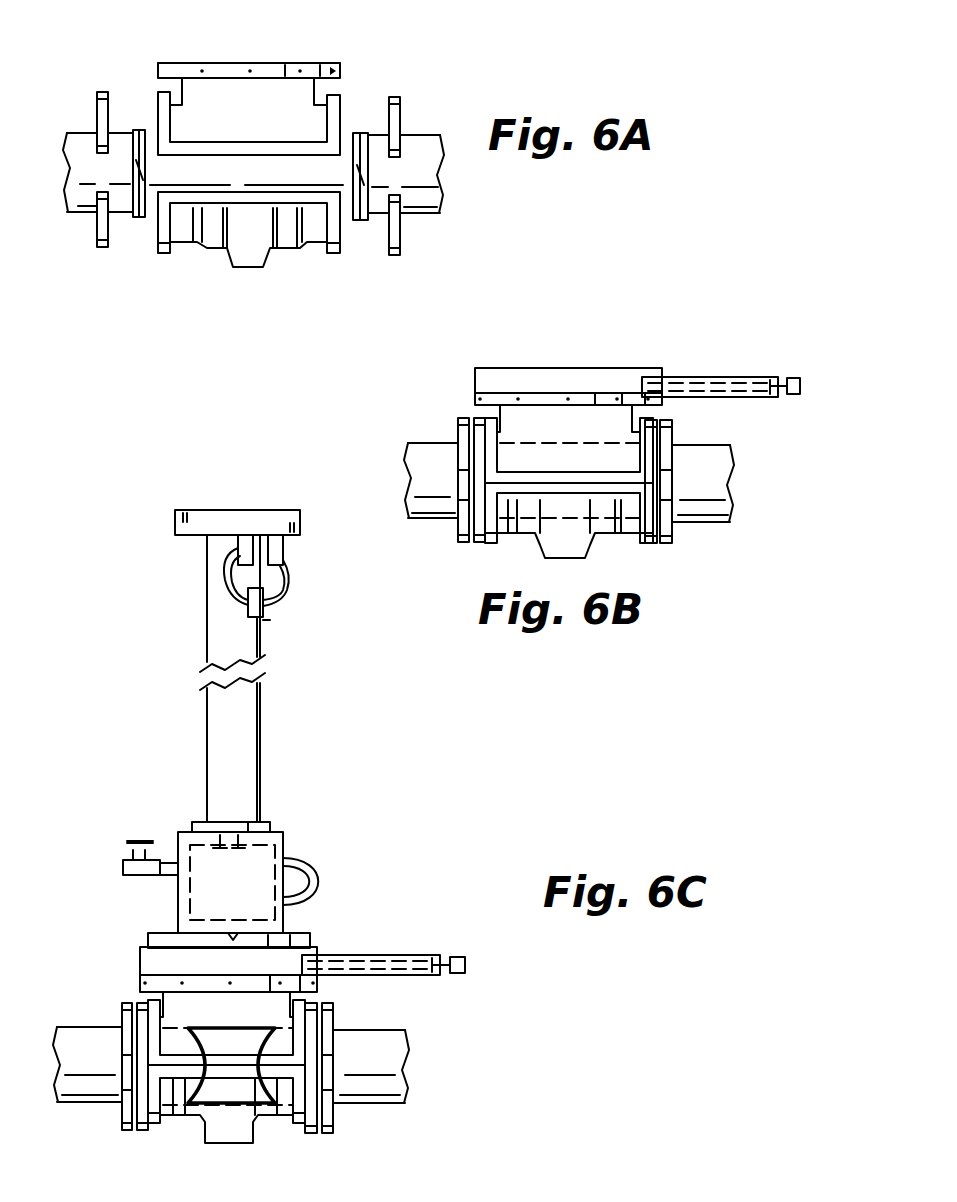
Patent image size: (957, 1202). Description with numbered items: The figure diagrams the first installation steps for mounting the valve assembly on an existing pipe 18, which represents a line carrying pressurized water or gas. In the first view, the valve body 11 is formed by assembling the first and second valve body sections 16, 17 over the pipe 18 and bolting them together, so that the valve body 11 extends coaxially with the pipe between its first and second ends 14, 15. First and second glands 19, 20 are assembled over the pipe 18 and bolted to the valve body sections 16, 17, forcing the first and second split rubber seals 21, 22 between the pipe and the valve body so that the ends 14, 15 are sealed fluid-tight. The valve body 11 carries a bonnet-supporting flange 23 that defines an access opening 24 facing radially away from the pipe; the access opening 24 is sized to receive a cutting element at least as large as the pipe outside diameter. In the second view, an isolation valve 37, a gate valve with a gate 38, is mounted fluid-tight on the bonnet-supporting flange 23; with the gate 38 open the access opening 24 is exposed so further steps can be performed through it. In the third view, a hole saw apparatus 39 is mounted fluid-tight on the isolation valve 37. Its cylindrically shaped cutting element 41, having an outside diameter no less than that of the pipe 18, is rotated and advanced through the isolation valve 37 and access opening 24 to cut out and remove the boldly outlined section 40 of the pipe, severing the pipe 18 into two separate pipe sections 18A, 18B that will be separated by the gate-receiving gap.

In FIG. 6A, the valve body 11 is at (251, 173).
In FIG. 6B, the valve body 11 is at (468, 413).
In FIG. 6C, the valve body 11 is at (135, 992).
In FIG. 6B, the first end 14 is at (478, 544).
In FIG. 6B, the second end 15 is at (657, 546).
In FIG. 6A, the first valve body section 16 is at (342, 96).
In FIG. 6A, the second valve body section 17 is at (325, 255).
In FIG. 6A, the existing pipe 18 is at (66, 124).
In FIG. 6B, the existing pipe 18 is at (398, 438).
In FIG. 6C, the existing pipe 18 is at (236, 1056).
In FIG. 6C, the first pipe section 18A is at (90, 1104).
In FIG. 6C, the second pipe section 18B is at (385, 1104).
In FIG. 6A, the first gland 19 is at (101, 248).
In FIG. 6A, the second gland 20 is at (401, 238).
In FIG. 6A, the first split rubber seal 21 is at (137, 218).
In FIG. 6A, the second split rubber seal 22 is at (362, 222).
In FIG. 6A, the bonnet-supporting flange 23 is at (323, 66).
In FIG. 6B, the bonnet-supporting flange 23 is at (661, 404).
In FIG. 6C, the bonnet-supporting flange 23 is at (320, 992).
In FIG. 6A, the access opening 24 is at (252, 52).
In FIG. 6B, the isolation valve 37 is at (741, 377).
In FIG. 6C, the isolation valve 37 is at (401, 955).
In FIG. 6B, the gate 38 is at (751, 394).
In FIG. 6C, the gate 38 is at (411, 975).
In FIG. 6C, the hole saw apparatus 39 is at (172, 500).
In FIG. 6C, the section of the pipe 40 is at (256, 1105).
In FIG. 6C, the cylindrically shaped cutting element 41 is at (178, 836).